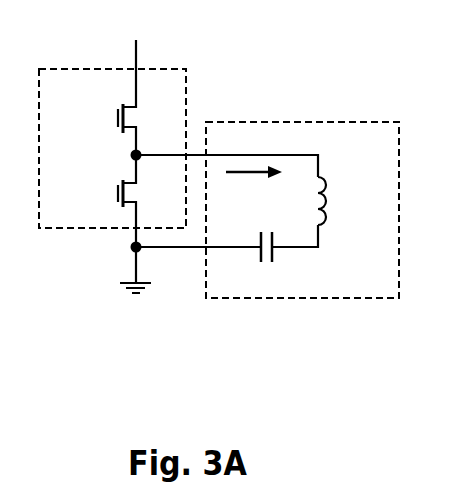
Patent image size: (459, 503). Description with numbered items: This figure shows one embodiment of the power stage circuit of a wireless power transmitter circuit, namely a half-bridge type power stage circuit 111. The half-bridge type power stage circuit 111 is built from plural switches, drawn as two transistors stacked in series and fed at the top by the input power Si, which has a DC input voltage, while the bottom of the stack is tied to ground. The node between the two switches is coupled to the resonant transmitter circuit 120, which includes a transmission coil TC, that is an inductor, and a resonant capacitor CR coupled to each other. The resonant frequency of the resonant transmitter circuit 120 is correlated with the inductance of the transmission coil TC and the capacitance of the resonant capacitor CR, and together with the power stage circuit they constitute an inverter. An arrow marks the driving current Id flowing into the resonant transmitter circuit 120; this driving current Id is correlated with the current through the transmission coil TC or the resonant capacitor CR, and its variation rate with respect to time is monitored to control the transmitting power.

The half-bridge type power stage circuit 111 is at (82, 219).
The resonant transmitter circuit 120 is at (267, 210).
The input power Si is at (159, 84).
The transmission coil TC is at (306, 201).
The resonant capacitor CR is at (265, 261).
The driving current Id is at (254, 183).